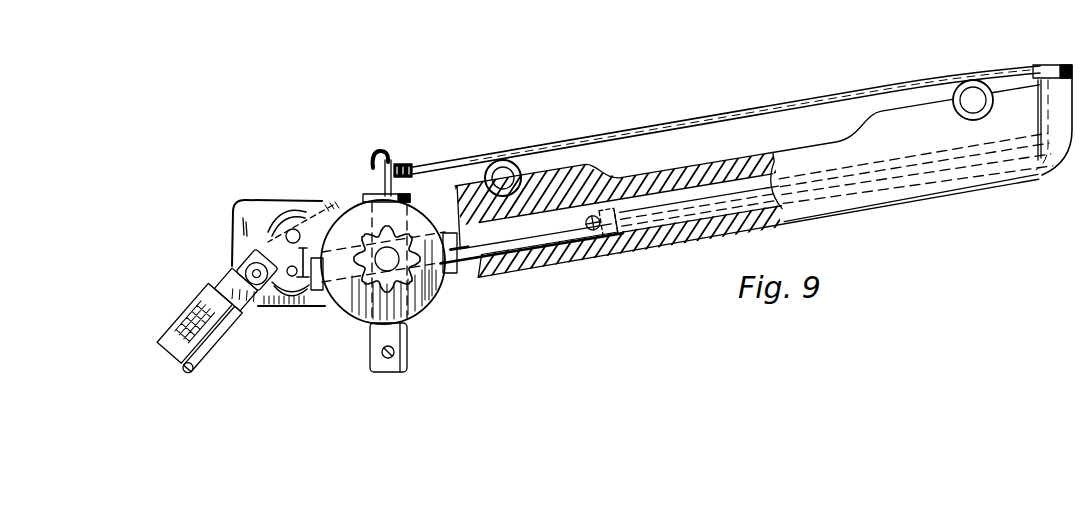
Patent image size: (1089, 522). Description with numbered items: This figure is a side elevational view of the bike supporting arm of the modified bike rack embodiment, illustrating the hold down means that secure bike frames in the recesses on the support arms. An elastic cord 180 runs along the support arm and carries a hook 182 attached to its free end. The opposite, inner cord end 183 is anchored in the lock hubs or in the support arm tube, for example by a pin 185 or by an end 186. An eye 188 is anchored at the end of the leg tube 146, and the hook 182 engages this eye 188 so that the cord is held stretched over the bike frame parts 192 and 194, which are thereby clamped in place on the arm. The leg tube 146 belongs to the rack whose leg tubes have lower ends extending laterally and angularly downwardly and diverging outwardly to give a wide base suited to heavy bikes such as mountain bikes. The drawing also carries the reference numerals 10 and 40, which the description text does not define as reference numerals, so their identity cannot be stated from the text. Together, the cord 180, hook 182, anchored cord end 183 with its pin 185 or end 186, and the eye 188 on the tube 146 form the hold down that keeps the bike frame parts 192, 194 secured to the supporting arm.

The power tool head 10 is at (381, 257).
The handle assembly 40 is at (247, 287).
The leg tube 146 is at (410, 328).
The elastic cord 180 is at (811, 100).
The hook 182 is at (411, 163).
The inner cord end 183 is at (614, 250).
The pin 185 is at (598, 215).
The end 186 is at (584, 262).
The eye 188 is at (383, 181).
The bike frame part 192 is at (503, 160).
The bike frame part 194 is at (978, 80).